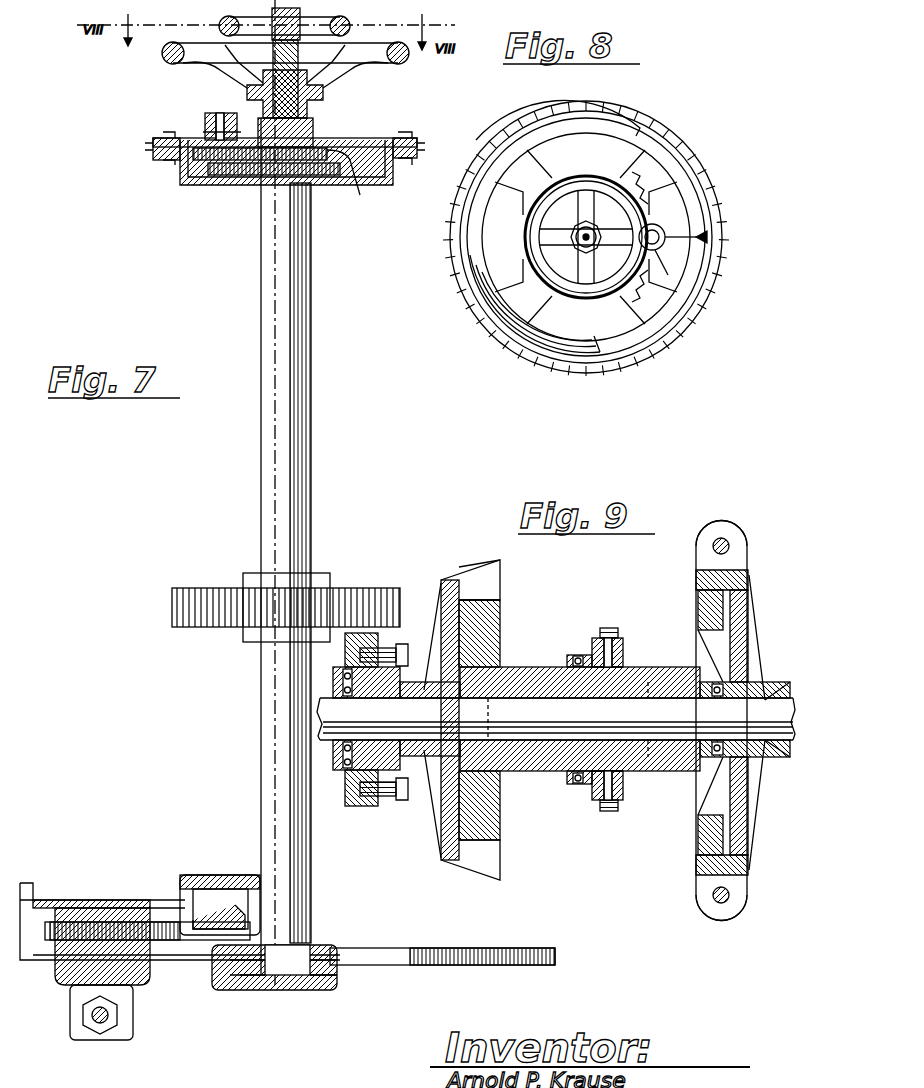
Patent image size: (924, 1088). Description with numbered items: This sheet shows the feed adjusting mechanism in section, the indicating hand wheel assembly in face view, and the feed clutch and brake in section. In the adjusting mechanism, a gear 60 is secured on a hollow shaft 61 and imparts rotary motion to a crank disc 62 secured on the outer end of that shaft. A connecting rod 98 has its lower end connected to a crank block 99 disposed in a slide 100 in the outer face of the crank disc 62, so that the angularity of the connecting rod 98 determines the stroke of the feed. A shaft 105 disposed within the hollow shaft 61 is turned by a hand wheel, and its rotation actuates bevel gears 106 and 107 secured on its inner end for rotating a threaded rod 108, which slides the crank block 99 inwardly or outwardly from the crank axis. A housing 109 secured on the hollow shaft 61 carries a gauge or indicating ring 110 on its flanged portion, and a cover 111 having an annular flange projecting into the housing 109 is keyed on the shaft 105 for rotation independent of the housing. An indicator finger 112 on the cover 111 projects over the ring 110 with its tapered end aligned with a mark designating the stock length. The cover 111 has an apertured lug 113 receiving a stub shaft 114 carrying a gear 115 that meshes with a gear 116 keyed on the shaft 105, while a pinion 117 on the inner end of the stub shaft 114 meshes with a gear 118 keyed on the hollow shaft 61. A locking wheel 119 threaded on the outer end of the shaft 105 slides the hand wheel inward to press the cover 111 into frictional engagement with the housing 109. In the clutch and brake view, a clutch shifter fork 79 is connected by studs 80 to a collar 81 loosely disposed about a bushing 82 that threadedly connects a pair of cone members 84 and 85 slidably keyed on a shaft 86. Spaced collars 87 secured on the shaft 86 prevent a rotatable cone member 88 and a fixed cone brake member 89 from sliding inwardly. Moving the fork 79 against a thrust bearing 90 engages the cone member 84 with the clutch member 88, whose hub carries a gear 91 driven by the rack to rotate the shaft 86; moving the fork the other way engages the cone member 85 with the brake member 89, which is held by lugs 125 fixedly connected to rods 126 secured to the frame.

In FIG. 7, the gear 60 is at (172, 609).
In FIG. 7, the hollow shaft 61 is at (261, 788).
In FIG. 7, the crank disc 62 is at (455, 966).
In FIG. 9, the clutch shifter fork 79 is at (625, 652).
In FIG. 9, the studs 80 is at (609, 628).
In FIG. 9, the collar 81 is at (626, 788).
In FIG. 9, the bushing 82 is at (570, 774).
In FIG. 9, the cone member 84 is at (492, 598).
In FIG. 9, the cone member 85 is at (688, 596).
In FIG. 9, the shaft 86 is at (515, 700).
In FIG. 9, the spaced collars 87 is at (448, 760).
In FIG. 9, the clutch or cone member 88 is at (470, 868).
In FIG. 9, the fixed cone brake member 89 is at (740, 862).
In FIG. 9, the thrust bearing 90 is at (578, 790).
In FIG. 9, the gear 91 is at (345, 806).
In FIG. 7, the connecting rod 98 is at (92, 1034).
In FIG. 7, the crank block 99 is at (58, 962).
In FIG. 7, the slide 100 is at (214, 514).
In FIG. 7, the shaft 105 is at (308, 104).
In FIG. 7, the bevel gear 106 is at (330, 990).
In FIG. 7, the bevel gear 107 is at (246, 900).
In FIG. 7, the threaded rod 108 is at (182, 900).
In FIG. 7, the housing 109 is at (213, 186).
In FIG. 8, the housing 109 is at (490, 265).
In FIG. 7, the gauge or indicating ring 110 is at (414, 142).
In FIG. 8, the gauge or indicating ring 110 is at (700, 146).
In FIG. 7, the cover 111 is at (378, 140).
In FIG. 8, the cover 111 is at (672, 330).
In FIG. 8, the indicator finger 112 is at (708, 232).
In FIG. 7, the apertured lug 113 is at (204, 125).
In FIG. 7, the stub shaft 114 is at (221, 112).
In FIG. 8, the stub shaft 114 is at (668, 244).
In FIG. 7, the gear 115 is at (176, 160).
In FIG. 7, the gear 116 is at (332, 156).
In FIG. 7, the pinion 117 is at (223, 176).
In FIG. 7, the gear 118 is at (262, 186).
In FIG. 7, the locking wheel 119 is at (225, 30).
In FIG. 8, the locking wheel 119 is at (592, 305).
In FIG. 9, the lugs 125 is at (742, 548).
In FIG. 9, the rods 126 is at (724, 543).